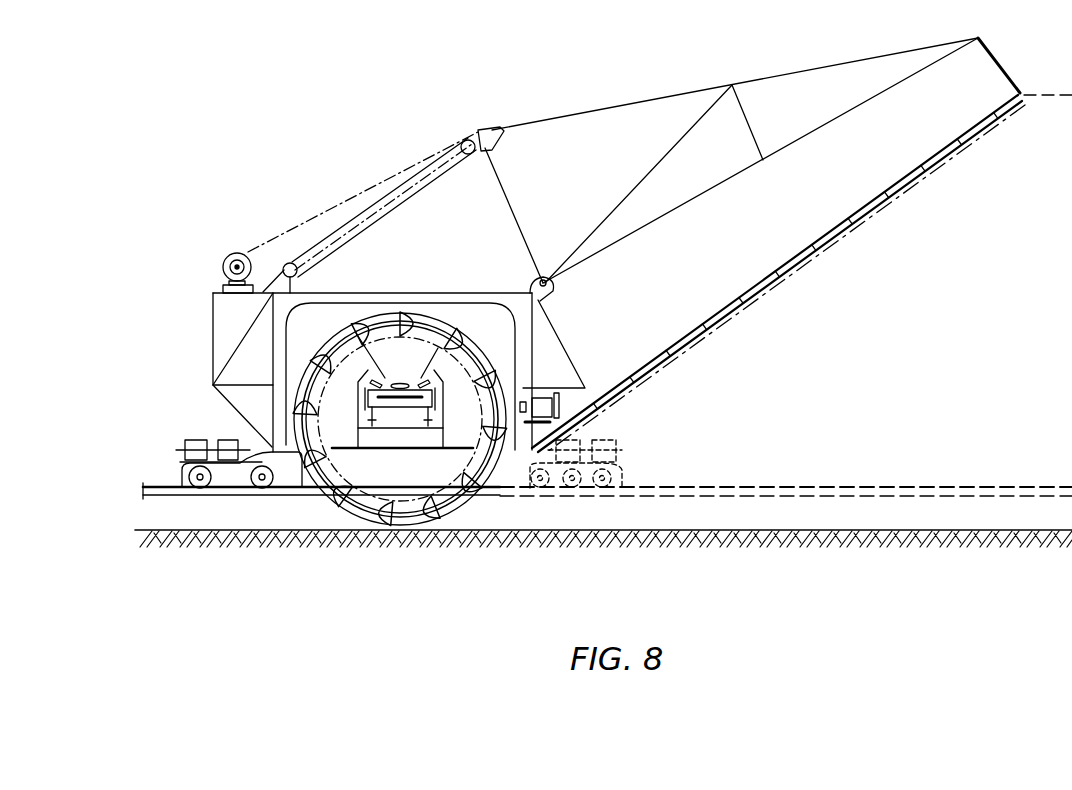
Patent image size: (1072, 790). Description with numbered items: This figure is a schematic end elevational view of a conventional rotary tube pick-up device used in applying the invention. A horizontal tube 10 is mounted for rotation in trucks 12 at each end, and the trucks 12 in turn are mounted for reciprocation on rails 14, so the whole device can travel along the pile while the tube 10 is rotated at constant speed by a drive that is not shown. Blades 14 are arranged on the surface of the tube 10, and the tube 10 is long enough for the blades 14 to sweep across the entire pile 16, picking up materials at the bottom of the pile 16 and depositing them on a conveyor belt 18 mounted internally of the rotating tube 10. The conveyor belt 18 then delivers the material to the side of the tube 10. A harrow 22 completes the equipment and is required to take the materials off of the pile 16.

The horizontal tube 10 is at (468, 493).
The trucks 12 is at (291, 478).
The blades 14 is at (150, 485).
The pile 16 is at (986, 230).
The conveyor belt 18 is at (399, 370).
The harrow 22 is at (798, 255).